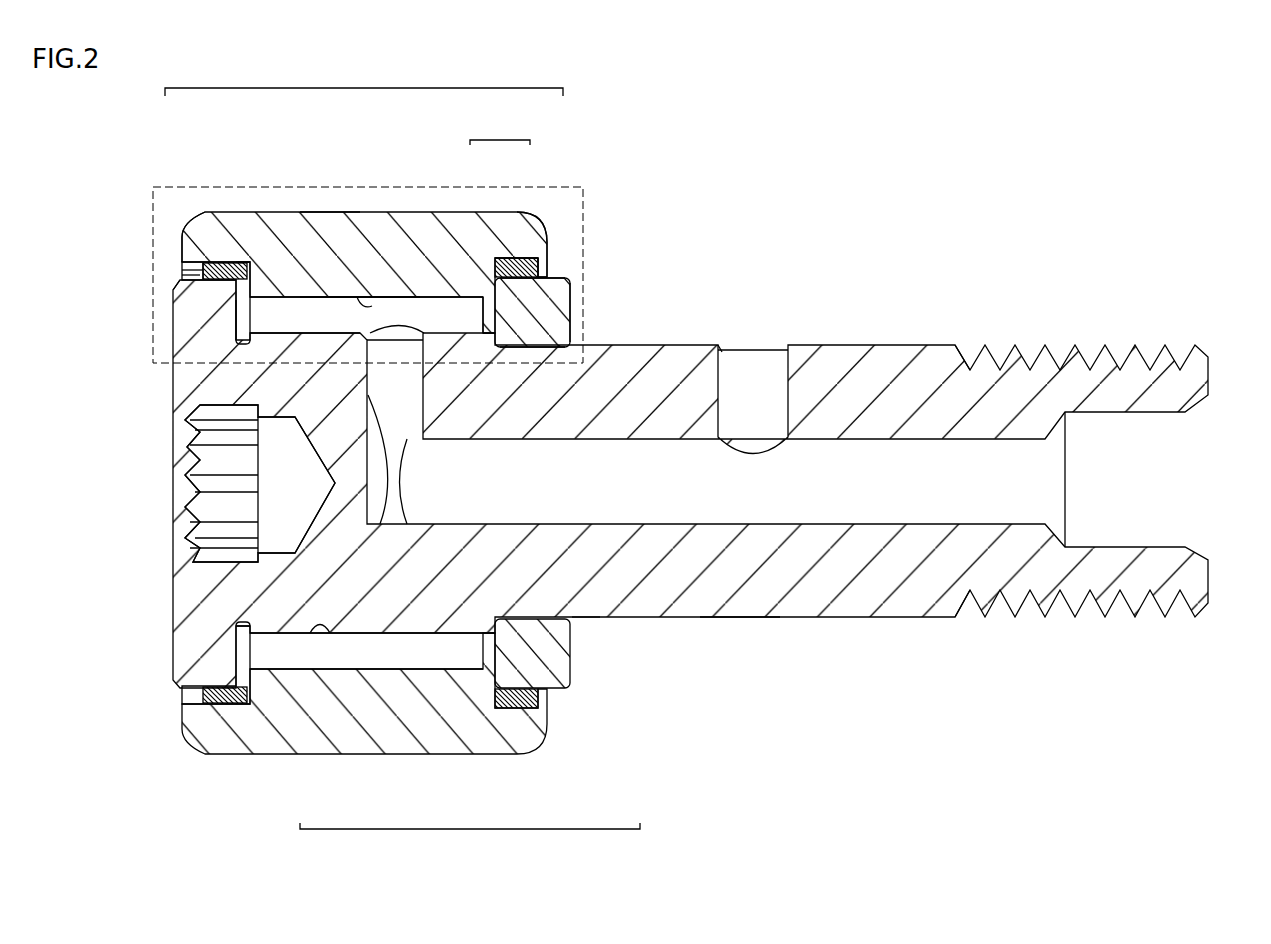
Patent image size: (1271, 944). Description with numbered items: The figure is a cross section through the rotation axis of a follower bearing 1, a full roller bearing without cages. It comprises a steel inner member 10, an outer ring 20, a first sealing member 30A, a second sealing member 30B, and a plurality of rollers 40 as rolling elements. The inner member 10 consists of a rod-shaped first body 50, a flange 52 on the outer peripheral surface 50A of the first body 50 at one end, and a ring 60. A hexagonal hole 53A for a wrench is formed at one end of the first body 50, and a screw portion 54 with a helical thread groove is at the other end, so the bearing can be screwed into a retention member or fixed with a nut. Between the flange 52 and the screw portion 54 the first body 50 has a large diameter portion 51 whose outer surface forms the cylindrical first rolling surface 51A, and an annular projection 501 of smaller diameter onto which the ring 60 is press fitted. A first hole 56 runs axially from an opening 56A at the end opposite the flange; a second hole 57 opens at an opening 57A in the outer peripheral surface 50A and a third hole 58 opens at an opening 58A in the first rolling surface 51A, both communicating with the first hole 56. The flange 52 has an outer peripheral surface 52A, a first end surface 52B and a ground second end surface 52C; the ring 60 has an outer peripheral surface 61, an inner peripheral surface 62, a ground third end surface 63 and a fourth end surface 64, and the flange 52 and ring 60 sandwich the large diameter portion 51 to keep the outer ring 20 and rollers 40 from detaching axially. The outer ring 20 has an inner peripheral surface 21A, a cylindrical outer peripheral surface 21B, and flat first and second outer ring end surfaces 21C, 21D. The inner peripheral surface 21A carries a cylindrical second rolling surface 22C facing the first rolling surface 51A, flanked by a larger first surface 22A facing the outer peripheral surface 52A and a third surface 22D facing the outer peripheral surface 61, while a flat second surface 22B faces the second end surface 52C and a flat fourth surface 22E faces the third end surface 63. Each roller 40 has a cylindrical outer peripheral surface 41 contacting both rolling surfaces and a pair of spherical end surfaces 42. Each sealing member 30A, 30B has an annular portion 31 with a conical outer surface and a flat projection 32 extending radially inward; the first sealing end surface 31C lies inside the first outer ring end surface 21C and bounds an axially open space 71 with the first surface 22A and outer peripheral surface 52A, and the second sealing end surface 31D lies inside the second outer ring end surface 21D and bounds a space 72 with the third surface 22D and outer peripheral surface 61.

The follower bearing 1 is at (1147, 234).
The inner member 10 is at (470, 839).
The outer ring 20 is at (400, 240).
The inner peripheral surface 21A is at (364, 79).
The outer peripheral surface 21B is at (330, 214).
The first outer ring end surface 21C is at (180, 240).
The second outer ring end surface 21D is at (540, 233).
The first surface 22A is at (200, 258).
The second surface 22B is at (238, 262).
The second rolling surface 22C is at (365, 297).
The third surface 22D is at (528, 218).
The fourth surface 22E is at (482, 285).
The first sealing member 30A is at (210, 268).
The second sealing member 30B is at (530, 774).
The annular portion 31 is at (520, 262).
The projection 32 is at (500, 262).
The first sealing end surface 31C is at (200, 266).
The second sealing end surface 31D is at (525, 262).
The rollers 40 is at (250, 300).
The outer peripheral surface 41 is at (322, 626).
The end surfaces 42 is at (238, 640).
The first body 50 is at (665, 598).
The outer peripheral surface 50A is at (735, 618).
The annular projection 501 is at (560, 630).
The large diameter portion 51 is at (275, 318).
The first rolling surface 51A is at (352, 330).
The flange 52 is at (242, 342).
The outer peripheral surface 52A is at (195, 276).
The first end surface 52B is at (172, 300).
The second end surface 52C is at (236, 330).
The hexagonal hole 53A is at (197, 550).
The screw portion 54 is at (1035, 365).
The first hole 56 is at (836, 520).
The opening 56A is at (1200, 402).
The second hole 57 is at (755, 352).
The opening 57A is at (727, 360).
The third hole 58 is at (376, 400).
The opening 58A is at (197, 410).
The ring 60 is at (548, 316).
The outer peripheral surface 61 is at (536, 280).
The inner peripheral surface 62 is at (546, 352).
The third end surface 63 is at (488, 300).
The fourth end surface 64 is at (569, 292).
The space 71 is at (186, 272).
The space 72 is at (546, 268).